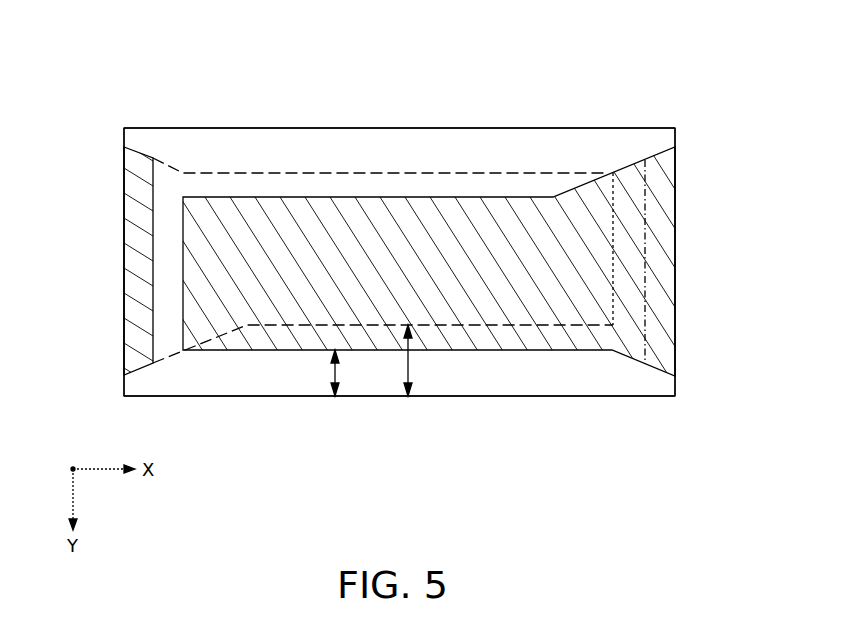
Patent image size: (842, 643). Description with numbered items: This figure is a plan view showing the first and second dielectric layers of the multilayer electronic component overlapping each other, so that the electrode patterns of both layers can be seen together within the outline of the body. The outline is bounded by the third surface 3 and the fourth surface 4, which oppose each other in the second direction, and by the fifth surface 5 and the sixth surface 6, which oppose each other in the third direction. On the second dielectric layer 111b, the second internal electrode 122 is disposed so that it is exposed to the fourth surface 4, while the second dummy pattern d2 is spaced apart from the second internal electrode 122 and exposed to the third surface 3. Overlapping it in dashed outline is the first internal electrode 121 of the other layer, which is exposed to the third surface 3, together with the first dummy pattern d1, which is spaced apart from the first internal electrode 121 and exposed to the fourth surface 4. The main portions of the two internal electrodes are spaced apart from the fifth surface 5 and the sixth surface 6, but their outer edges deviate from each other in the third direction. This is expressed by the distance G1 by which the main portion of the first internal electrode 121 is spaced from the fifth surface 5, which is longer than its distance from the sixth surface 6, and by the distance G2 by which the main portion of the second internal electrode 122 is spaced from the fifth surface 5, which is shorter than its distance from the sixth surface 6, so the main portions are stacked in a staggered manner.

The third surface 3 is at (104, 130).
The fourth surface 4 is at (694, 132).
The fifth surface 5 is at (373, 418).
The sixth surface 6 is at (424, 108).
The second dielectric layer 111b is at (510, 153).
The first internal electrode 121 is at (332, 187).
The second internal electrode 122 is at (537, 337).
The first dummy pattern d1 is at (668, 233).
The second dummy pattern d2 is at (137, 247).
The distance by which the first main portion is spaced apart from the fifth surface G1 is at (424, 360).
The distance by which the second main portion is spaced apart from the fifth surface G2 is at (353, 373).